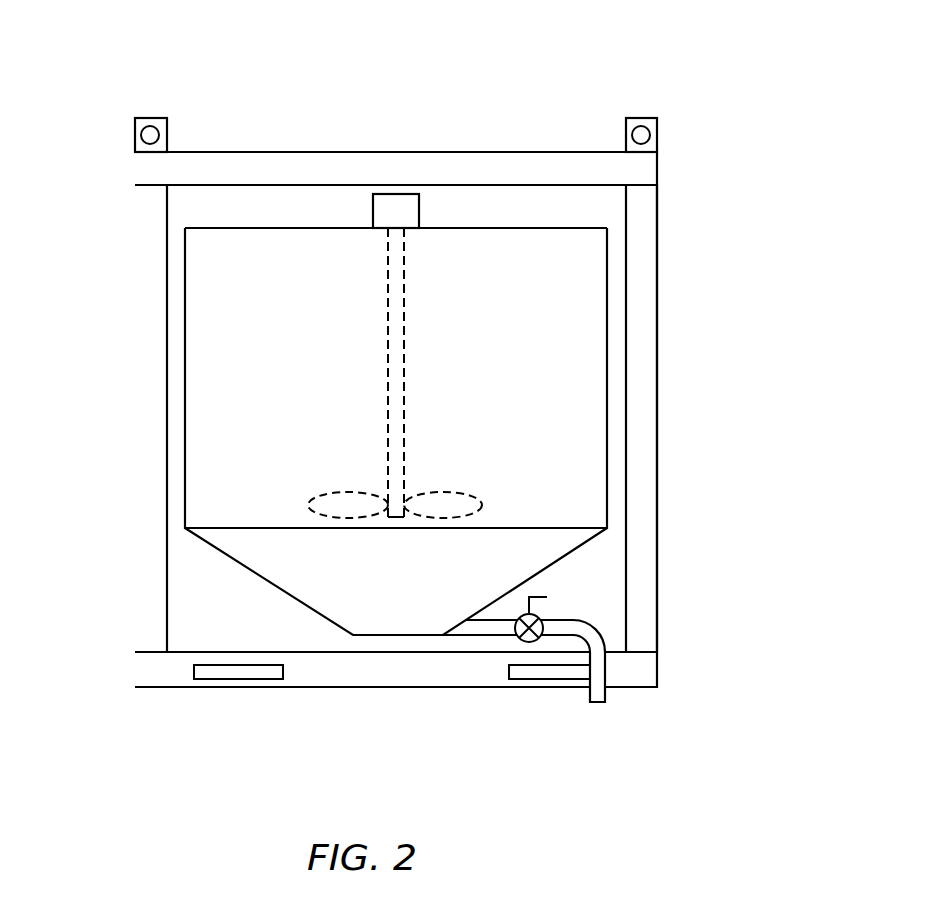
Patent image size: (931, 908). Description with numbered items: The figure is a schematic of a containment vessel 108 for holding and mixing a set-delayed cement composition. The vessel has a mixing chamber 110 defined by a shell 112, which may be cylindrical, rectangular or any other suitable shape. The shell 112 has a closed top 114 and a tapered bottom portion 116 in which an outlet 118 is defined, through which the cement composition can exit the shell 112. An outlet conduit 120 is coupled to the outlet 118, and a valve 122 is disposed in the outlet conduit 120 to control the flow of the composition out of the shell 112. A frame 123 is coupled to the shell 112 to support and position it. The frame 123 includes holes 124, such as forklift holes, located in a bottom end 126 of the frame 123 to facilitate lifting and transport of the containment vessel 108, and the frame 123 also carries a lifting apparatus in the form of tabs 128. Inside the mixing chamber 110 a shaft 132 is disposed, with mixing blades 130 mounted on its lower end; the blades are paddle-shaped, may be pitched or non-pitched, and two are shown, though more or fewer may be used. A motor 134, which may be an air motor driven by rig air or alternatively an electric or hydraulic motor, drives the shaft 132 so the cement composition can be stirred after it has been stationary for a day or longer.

The containment vessel 108 is at (757, 103).
The mixing chamber 110 is at (210, 442).
The shell 112 is at (185, 331).
The closed top 114 is at (218, 228).
The tapered bottom portion 116 is at (572, 550).
The outlet 118 is at (466, 622).
The outlet conduit 120 is at (601, 702).
The valve 122 is at (545, 612).
The frame 123 is at (658, 225).
The holes 124 is at (270, 680).
The bottom end 126 is at (163, 690).
The tabs 128 is at (145, 117).
The mixing blades 130 is at (455, 492).
The shaft 132 is at (404, 264).
The motor 134 is at (399, 194).